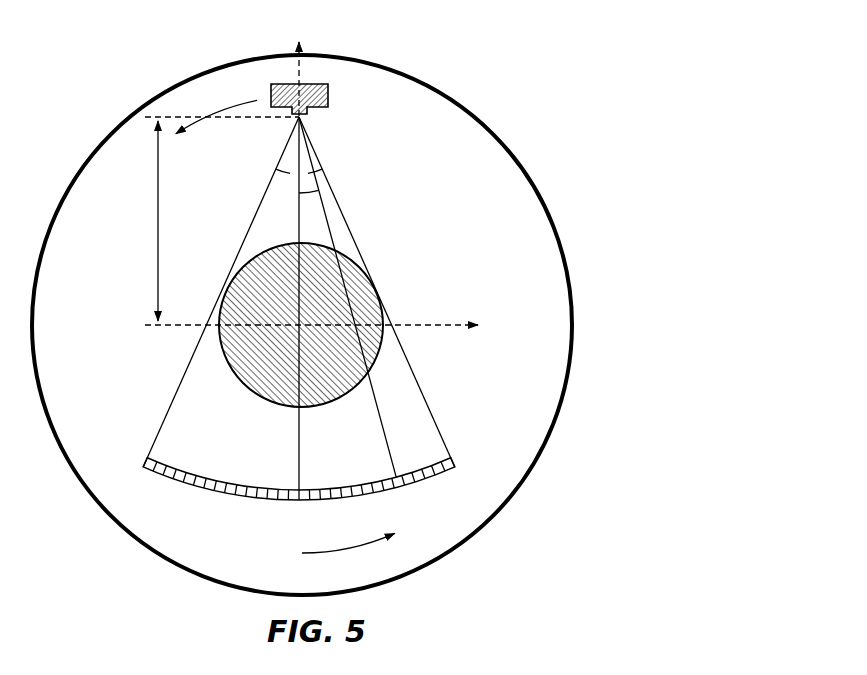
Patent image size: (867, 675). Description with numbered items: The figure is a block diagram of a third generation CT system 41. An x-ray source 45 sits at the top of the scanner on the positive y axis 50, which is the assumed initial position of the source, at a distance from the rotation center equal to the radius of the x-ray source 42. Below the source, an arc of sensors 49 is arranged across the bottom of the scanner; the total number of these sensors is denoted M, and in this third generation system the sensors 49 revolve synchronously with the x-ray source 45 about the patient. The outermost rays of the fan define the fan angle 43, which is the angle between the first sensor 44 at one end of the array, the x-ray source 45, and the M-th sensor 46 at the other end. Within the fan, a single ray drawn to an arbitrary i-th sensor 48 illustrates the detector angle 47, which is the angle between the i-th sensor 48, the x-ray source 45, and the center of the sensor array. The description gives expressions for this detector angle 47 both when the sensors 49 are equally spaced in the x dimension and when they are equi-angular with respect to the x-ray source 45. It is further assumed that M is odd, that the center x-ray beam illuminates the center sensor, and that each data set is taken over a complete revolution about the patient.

The third generation CT system 41 is at (302, 325).
The radius of the x-ray source 42 is at (142, 209).
The fan angle 43 is at (291, 168).
The first sensor 44 is at (473, 492).
The x-ray source 45 is at (327, 69).
The M-th sensor 46 is at (119, 492).
The detector angle 47 is at (339, 207).
The i-th sensor 48 is at (411, 505).
The sensors 49 is at (299, 503).
The positive y axis 50 is at (288, 20).